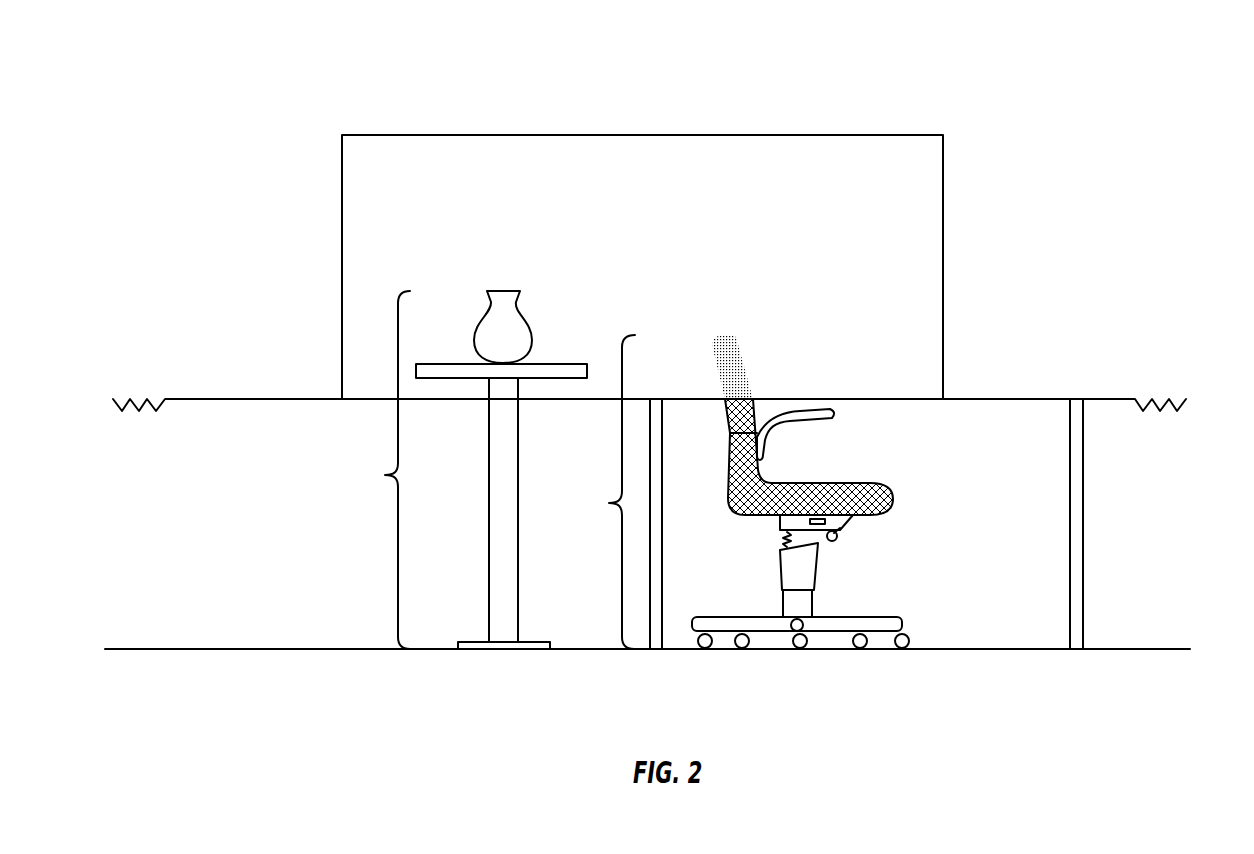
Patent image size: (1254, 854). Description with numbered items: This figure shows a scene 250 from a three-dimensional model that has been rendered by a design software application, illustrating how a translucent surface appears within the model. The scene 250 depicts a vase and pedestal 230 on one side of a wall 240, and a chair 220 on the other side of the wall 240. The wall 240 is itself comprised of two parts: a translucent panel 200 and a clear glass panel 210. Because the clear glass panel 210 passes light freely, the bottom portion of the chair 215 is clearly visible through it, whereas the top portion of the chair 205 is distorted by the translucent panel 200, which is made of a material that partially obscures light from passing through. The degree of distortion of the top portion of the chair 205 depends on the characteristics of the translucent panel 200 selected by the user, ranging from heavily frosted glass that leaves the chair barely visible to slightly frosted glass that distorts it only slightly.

The translucent panel 200 is at (928, 267).
The top portion of the chair 205 is at (743, 378).
The clear glass panel 210 is at (1015, 430).
The bottom portion of the chair 215 is at (893, 490).
The chair 220 is at (599, 492).
The vase and pedestal 230 is at (373, 470).
The wall 240 is at (1018, 130).
The scene 250 is at (688, 82).